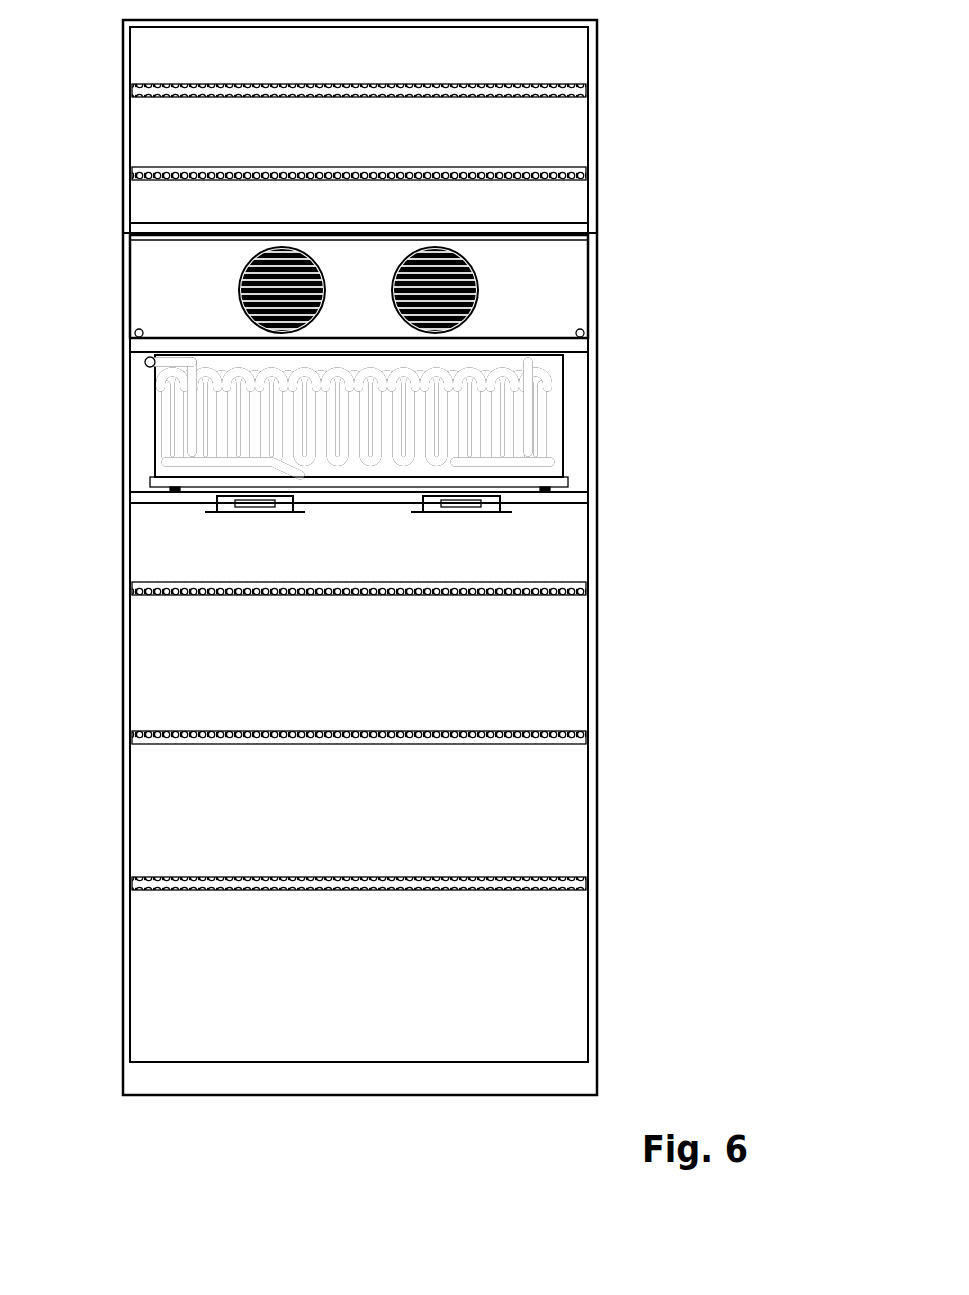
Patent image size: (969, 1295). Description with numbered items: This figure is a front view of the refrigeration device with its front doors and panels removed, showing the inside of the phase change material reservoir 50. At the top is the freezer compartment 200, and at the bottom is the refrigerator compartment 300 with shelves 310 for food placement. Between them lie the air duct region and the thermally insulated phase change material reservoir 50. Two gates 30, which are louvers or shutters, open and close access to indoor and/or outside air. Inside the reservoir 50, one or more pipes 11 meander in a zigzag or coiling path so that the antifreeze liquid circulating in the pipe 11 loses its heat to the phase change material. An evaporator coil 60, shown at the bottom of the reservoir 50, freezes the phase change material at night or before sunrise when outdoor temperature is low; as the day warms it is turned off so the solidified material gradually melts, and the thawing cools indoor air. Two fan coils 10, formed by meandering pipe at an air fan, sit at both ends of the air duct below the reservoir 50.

The freezer compartment 200 is at (210, 133).
The gates 30 is at (238, 292).
The pipe 11 is at (148, 364).
The phase change material reservoir 50 is at (572, 410).
The evaporator coil 60 is at (200, 487).
The fan coil 10 is at (225, 512).
The shelves 310 is at (552, 592).
The refrigerator compartment 300 is at (507, 831).